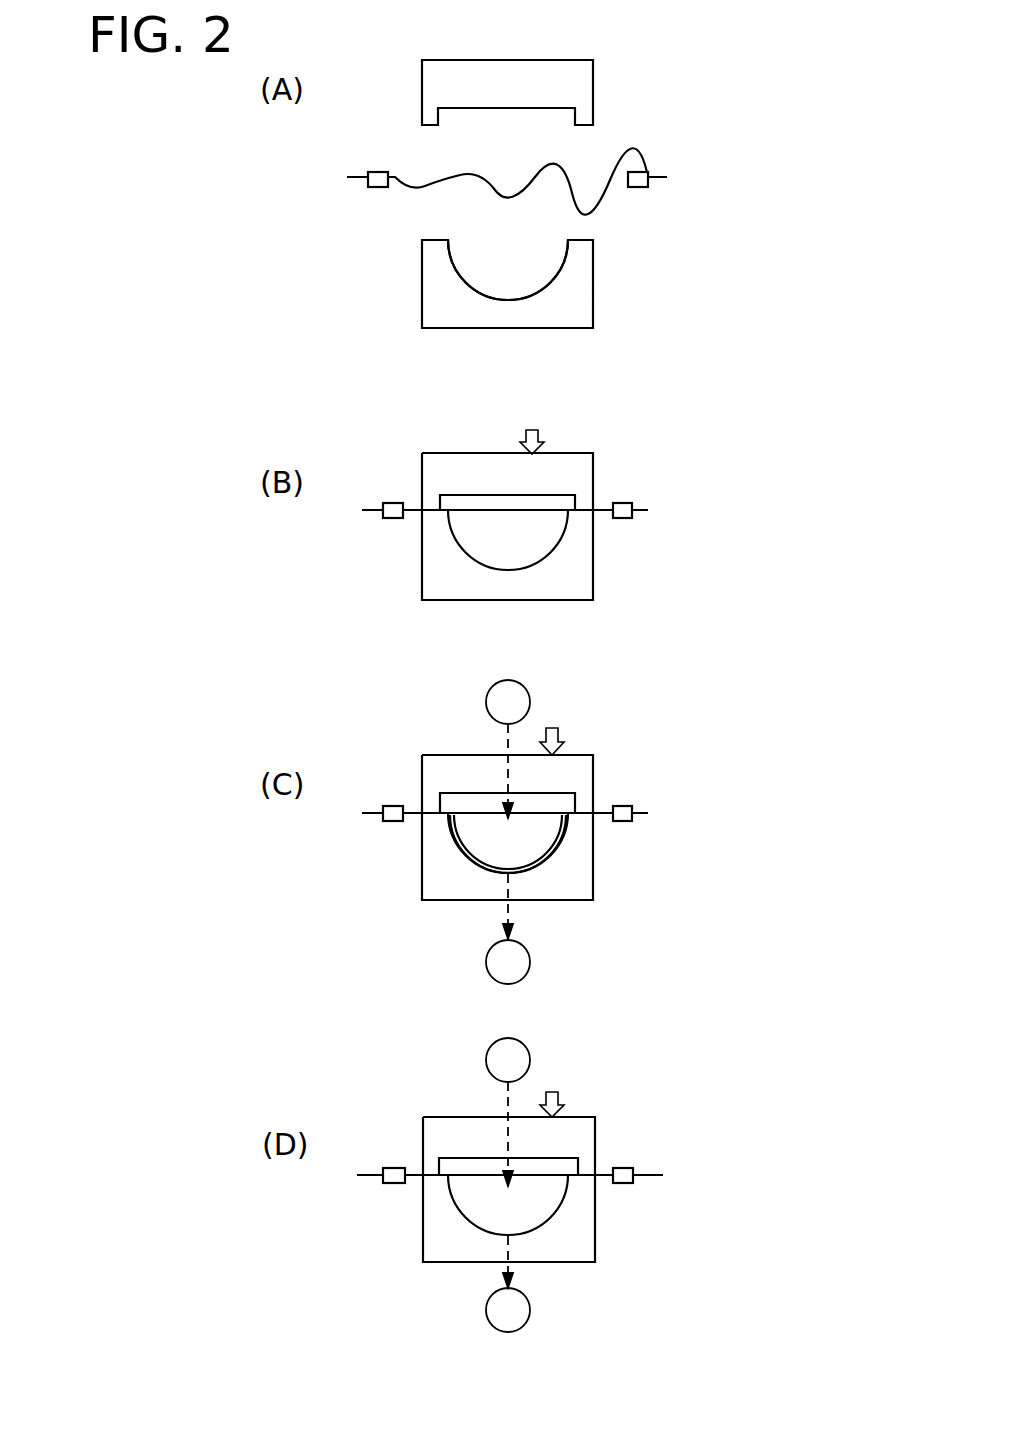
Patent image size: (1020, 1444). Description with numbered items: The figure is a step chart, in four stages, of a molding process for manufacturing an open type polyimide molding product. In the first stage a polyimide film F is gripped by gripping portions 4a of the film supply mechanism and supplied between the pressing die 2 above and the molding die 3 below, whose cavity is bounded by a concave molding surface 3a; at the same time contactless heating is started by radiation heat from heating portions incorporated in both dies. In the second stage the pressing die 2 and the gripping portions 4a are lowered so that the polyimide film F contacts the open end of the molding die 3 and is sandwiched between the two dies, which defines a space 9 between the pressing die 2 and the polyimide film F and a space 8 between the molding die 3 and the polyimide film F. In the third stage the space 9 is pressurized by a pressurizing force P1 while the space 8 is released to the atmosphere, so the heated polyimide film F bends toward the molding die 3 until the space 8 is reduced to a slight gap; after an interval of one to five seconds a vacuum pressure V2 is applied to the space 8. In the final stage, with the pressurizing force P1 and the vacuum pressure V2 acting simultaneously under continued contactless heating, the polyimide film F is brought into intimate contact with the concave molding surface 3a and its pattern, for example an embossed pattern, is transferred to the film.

The pressing die 2 is at (597, 73).
The molding die 3 is at (595, 300).
The concave molding surface 3a is at (455, 258).
The gripping portions 4a is at (375, 172).
The polyimide film F is at (572, 193).
The space between the pressing die and the polyimide film 9 is at (545, 505).
The space between the molding die and the polyimide film 8 is at (527, 552).
The pressurizing force P1 is at (508, 933).
The vacuum pressure V2 is at (508, 1103).